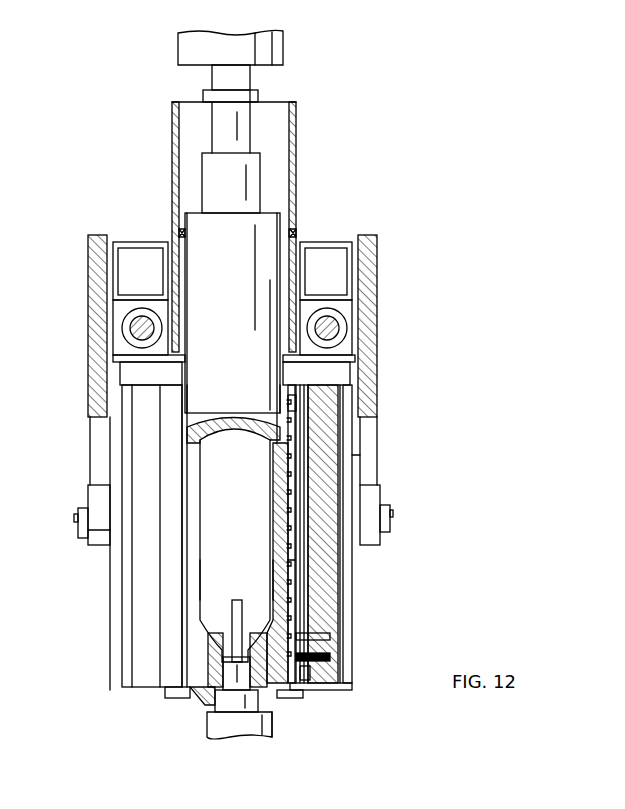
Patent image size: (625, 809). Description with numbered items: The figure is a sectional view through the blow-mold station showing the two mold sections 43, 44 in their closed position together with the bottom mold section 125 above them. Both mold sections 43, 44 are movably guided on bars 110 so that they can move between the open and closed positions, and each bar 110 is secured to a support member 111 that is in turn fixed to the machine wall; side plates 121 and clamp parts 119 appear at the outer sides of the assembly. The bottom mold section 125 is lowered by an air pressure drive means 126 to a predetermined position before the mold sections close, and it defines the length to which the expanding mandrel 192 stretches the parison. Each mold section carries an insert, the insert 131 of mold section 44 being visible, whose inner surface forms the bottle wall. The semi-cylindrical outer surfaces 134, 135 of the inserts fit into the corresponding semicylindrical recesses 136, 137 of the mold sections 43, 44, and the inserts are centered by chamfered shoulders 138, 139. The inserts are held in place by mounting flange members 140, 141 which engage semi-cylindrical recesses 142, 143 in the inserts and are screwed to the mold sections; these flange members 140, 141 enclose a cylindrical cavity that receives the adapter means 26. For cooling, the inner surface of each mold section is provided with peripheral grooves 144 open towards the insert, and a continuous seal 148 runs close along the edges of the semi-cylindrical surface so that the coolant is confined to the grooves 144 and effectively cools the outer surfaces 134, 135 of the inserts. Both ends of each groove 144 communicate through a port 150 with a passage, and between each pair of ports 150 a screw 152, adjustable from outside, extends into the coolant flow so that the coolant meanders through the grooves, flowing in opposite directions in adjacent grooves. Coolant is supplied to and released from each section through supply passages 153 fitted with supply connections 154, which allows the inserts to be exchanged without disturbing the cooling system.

The air pressure drive means 126 is at (283, 47).
The bottom mold section 125 is at (296, 232).
The support member 111 is at (135, 242).
The bar 110 is at (142, 328).
The side plate 121 is at (100, 408).
The clamp 119 is at (88, 504).
The port 150 is at (350, 455).
The chamfered shoulder 139 is at (187, 385).
The chamfered shoulder 138 is at (290, 385).
The seal 148 is at (292, 400).
The groove 144 is at (292, 465).
The mold section 44 is at (150, 614).
The semicylindrical recess 137 is at (230, 576).
The semicylindrical recess 136 is at (275, 584).
The pin 192 is at (244, 612).
The semi-cylindrical recess 143 is at (208, 655).
The insert 131 is at (258, 705).
The adapter means 26 is at (210, 730).
The mounting flange member 140 is at (272, 715).
The mounting flange member 141 is at (178, 698).
The outer surface 134 is at (292, 568).
The outer surface 135 is at (373, 565).
The supply passage 153 is at (302, 594).
The mold section 43 is at (322, 613).
The screw 152 is at (312, 646).
The supply connection 154 is at (312, 672).
The semi-cylindrical recess 142 is at (303, 696).